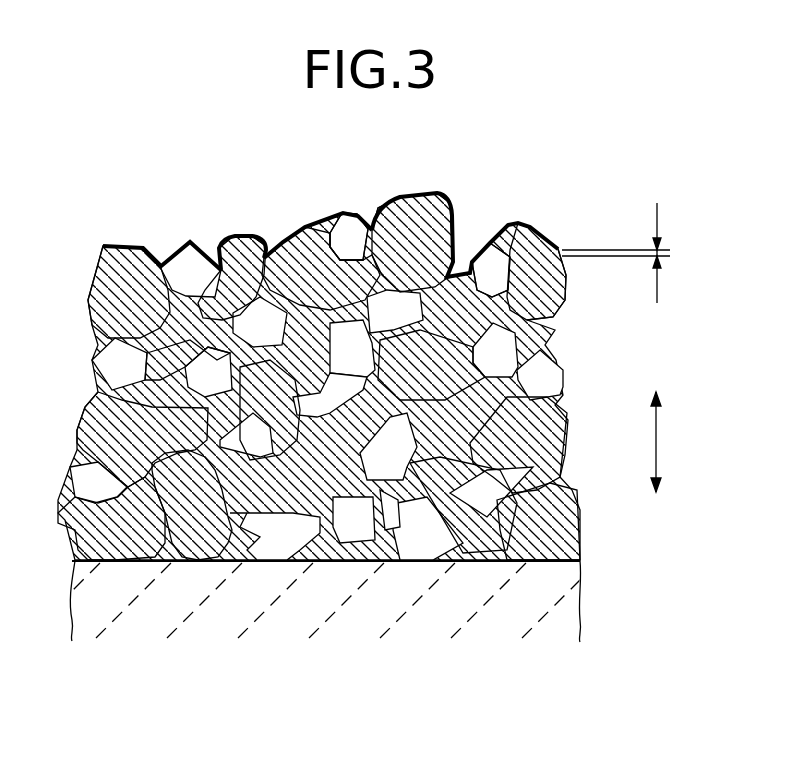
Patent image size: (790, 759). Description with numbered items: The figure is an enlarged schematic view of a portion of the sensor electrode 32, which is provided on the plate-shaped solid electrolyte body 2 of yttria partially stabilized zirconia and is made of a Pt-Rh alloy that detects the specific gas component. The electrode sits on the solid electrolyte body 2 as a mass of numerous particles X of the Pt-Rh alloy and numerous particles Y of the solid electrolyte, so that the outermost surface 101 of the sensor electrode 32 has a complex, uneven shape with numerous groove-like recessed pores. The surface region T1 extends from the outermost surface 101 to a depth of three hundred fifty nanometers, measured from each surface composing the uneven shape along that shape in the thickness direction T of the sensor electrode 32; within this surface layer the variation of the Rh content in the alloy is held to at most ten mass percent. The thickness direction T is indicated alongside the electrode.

The outermost surface 101 is at (238, 234).
The sensor electrode 32 is at (517, 211).
The solid electrolyte body 2 is at (362, 610).
The particles of the Pt-Rh alloy X is at (312, 275).
The particles of the solid electrolyte Y is at (480, 227).
The surface region T1 is at (616, 253).
The thickness direction T is at (667, 442).